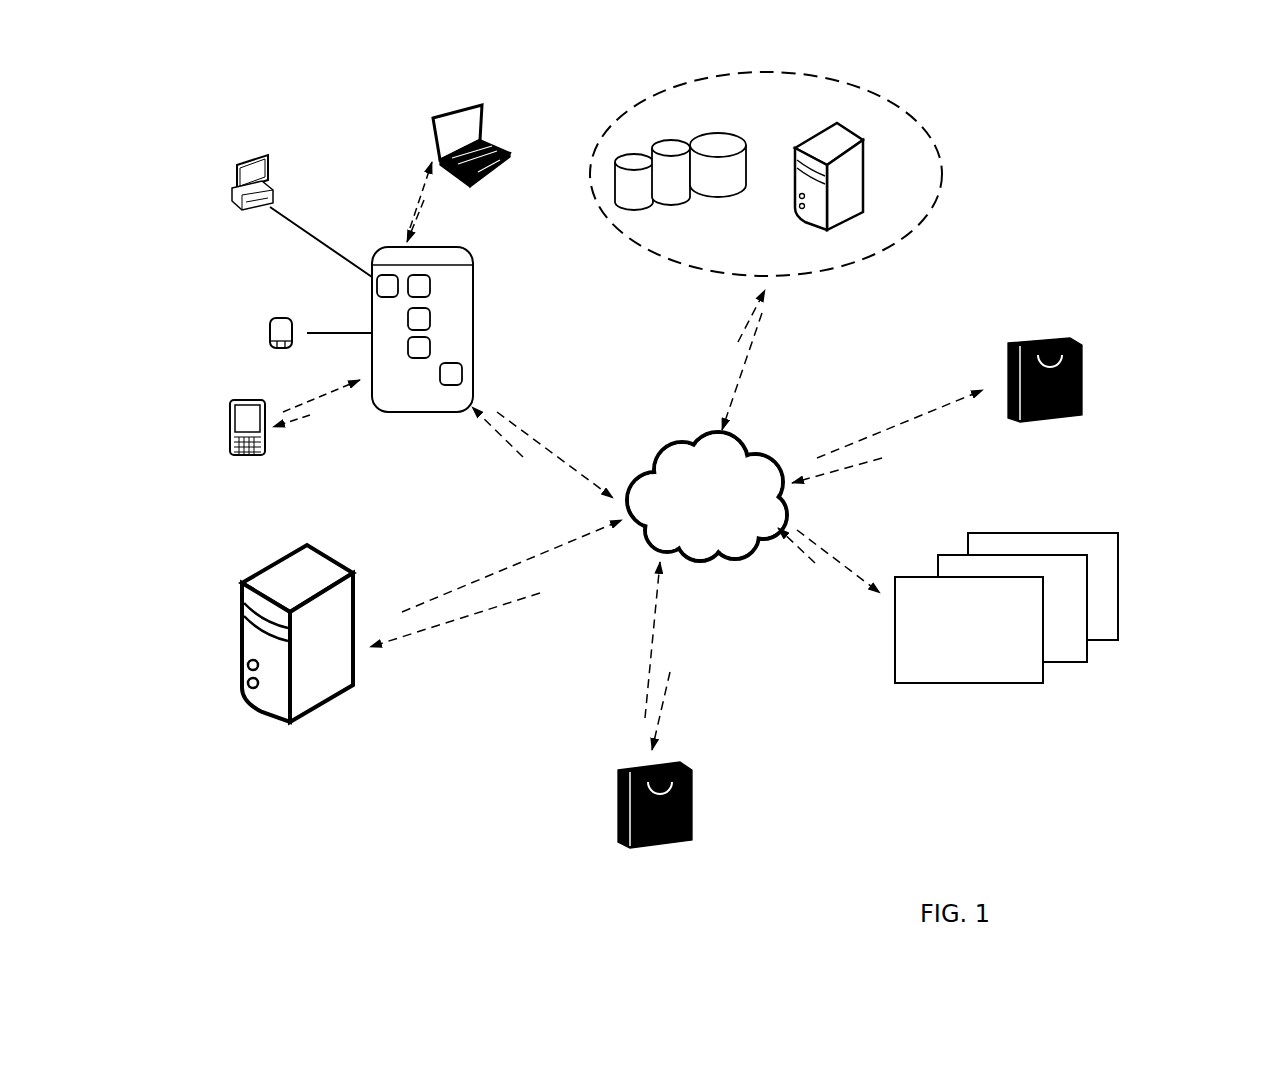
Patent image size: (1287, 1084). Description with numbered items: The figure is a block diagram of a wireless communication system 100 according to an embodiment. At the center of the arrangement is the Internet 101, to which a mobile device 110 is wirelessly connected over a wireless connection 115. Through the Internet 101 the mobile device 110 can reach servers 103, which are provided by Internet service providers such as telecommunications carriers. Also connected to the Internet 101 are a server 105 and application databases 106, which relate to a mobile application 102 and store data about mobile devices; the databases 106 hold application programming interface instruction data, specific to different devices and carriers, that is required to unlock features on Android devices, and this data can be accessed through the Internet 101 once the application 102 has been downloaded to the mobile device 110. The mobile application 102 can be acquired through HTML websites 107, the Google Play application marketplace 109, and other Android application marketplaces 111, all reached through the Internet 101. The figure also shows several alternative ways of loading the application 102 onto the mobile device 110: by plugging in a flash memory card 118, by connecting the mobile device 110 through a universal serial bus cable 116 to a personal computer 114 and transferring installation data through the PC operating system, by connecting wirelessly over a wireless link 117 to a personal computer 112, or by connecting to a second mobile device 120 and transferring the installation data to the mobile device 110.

The wireless communication system 100 is at (1050, 180).
The Internet 101 is at (707, 509).
The mobile application 102 is at (457, 365).
The servers 103 is at (377, 682).
The server 105 is at (847, 176).
The application databases 106 is at (680, 167).
The HTML websites 107 is at (1128, 618).
The application marketplace 109 is at (1063, 407).
The mobile device 110 is at (473, 273).
The other application marketplaces 111 is at (671, 829).
The personal computer 112 is at (425, 140).
The personal computer 114 is at (225, 163).
The wireless connection 115 is at (557, 445).
The universal serial bus cable 116 is at (323, 237).
The wireless connection 117 is at (415, 190).
The flash memory card 118 is at (265, 318).
The second mobile device 120 is at (227, 402).